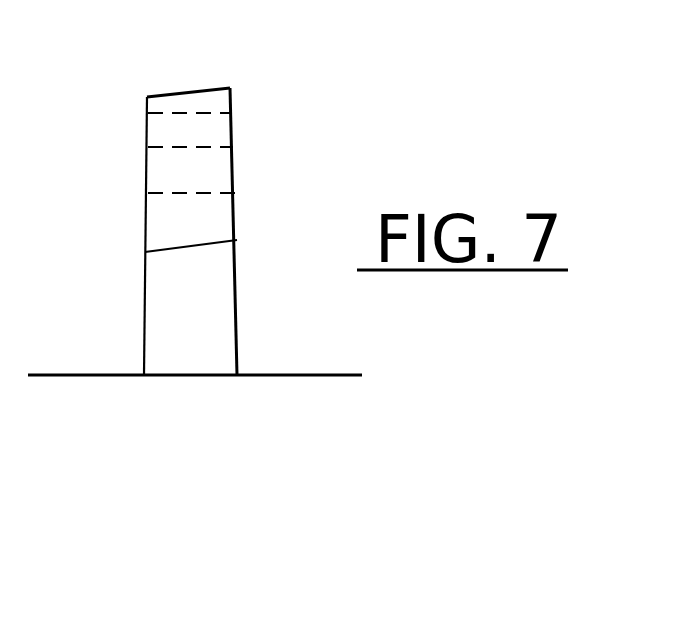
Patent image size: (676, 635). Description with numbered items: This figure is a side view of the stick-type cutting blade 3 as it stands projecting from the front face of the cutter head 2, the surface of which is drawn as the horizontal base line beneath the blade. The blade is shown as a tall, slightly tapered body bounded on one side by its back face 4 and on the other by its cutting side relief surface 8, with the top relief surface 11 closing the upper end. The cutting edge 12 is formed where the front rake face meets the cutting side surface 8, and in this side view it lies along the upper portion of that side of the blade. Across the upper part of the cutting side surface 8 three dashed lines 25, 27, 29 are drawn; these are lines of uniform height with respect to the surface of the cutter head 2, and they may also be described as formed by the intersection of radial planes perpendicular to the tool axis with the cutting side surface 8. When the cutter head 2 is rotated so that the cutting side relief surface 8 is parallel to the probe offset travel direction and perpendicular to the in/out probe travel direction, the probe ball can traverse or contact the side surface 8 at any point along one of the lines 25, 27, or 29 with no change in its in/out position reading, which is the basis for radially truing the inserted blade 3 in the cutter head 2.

The cutter head 2 is at (291, 375).
The cutting blade 3 is at (210, 321).
The back face 4 is at (145, 232).
The cutting side relief surface 8 is at (223, 128).
The top relief surface 11 is at (218, 88).
The cutting edge 12 is at (233, 175).
The line of uniform height 25 is at (176, 108).
The line of uniform height 27 is at (158, 148).
The line of uniform height 29 is at (185, 193).